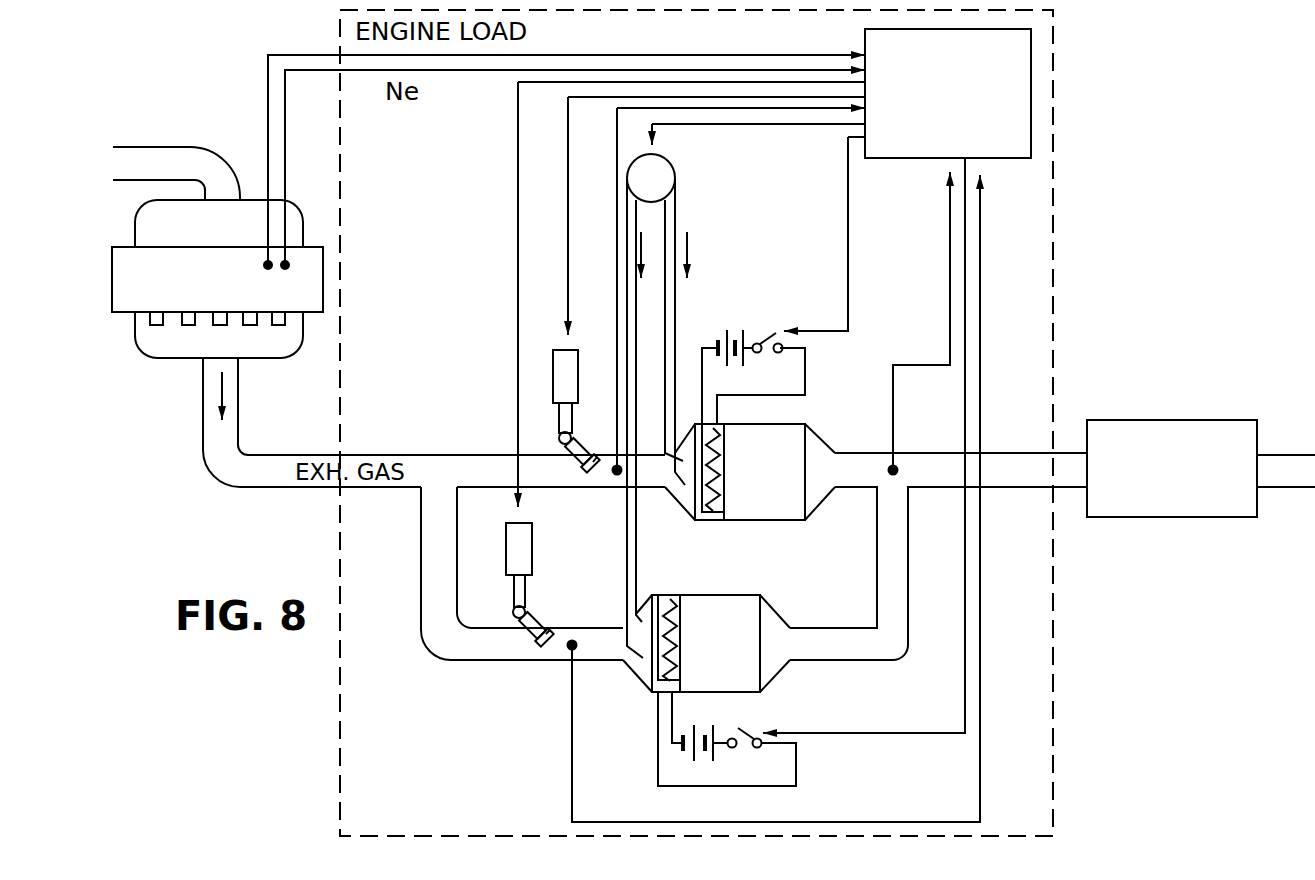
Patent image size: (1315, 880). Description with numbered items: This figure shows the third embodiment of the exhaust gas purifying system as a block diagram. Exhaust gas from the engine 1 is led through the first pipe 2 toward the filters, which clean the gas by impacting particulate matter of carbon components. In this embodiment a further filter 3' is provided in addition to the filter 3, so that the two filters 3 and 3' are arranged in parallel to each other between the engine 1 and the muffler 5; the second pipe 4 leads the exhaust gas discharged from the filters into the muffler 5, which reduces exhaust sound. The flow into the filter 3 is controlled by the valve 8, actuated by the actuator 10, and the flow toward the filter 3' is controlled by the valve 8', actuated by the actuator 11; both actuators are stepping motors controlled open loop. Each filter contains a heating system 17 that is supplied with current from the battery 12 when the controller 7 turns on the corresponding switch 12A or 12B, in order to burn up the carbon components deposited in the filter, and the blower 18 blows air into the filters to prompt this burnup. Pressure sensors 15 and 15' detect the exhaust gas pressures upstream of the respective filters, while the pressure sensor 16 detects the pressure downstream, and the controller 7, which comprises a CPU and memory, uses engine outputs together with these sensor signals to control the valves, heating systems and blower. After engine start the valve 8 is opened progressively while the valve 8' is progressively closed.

The engine 1 is at (300, 200).
The first pipe 2 is at (440, 455).
The filter 3 is at (754, 454).
The filter 3' is at (737, 647).
The second pipe 4 is at (1005, 450).
The muffler 5 is at (1165, 420).
The controller 7 is at (1000, 160).
The valve 8 is at (596, 425).
The valve 8' is at (568, 608).
The actuator 10 is at (580, 352).
The actuator 11 is at (533, 548).
The battery 12 is at (735, 333).
The switch 12A is at (784, 333).
The switch 12B is at (742, 748).
The pressure sensor 15 is at (739, 330).
The pressure sensor 15' is at (774, 498).
The pressure sensor 16 is at (900, 470).
The heating system 17 is at (717, 520).
The blower 18 is at (672, 168).